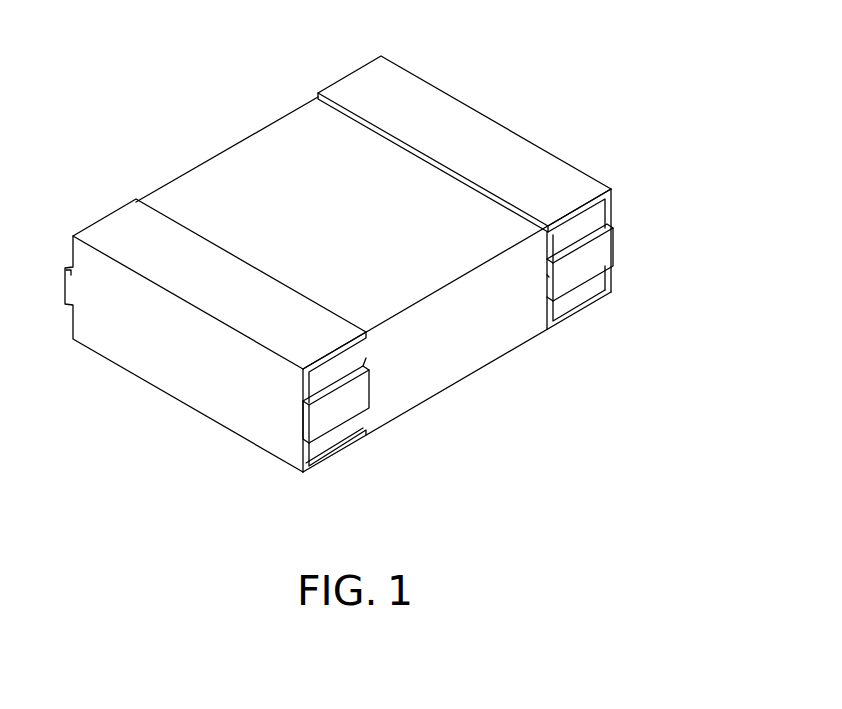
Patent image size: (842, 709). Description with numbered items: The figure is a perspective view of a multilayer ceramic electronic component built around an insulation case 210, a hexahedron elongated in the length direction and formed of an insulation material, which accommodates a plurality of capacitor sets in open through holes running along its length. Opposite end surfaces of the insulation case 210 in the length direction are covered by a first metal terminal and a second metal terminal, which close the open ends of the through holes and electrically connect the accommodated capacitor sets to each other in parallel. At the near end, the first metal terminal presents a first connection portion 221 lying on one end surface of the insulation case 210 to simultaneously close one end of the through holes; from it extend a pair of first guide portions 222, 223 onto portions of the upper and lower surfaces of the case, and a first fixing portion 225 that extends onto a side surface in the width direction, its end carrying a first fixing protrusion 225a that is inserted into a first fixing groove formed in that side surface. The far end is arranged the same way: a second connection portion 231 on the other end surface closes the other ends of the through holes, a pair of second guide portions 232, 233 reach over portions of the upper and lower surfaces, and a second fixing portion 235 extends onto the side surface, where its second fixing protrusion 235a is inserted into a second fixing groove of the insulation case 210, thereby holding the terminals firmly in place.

The insulation case 210 is at (258, 152).
The first connection portion 221 is at (148, 366).
The first guide portion 222 is at (105, 230).
The first guide portion 223 is at (328, 462).
The first fixing portion 225 is at (360, 402).
The first fixing protrusion 225a is at (365, 367).
The second connection portion 231 is at (605, 208).
The second guide portion 232 is at (358, 82).
The second guide portion 233 is at (597, 302).
The second fixing portion 235 is at (604, 253).
The second fixing protrusion 235a is at (548, 276).